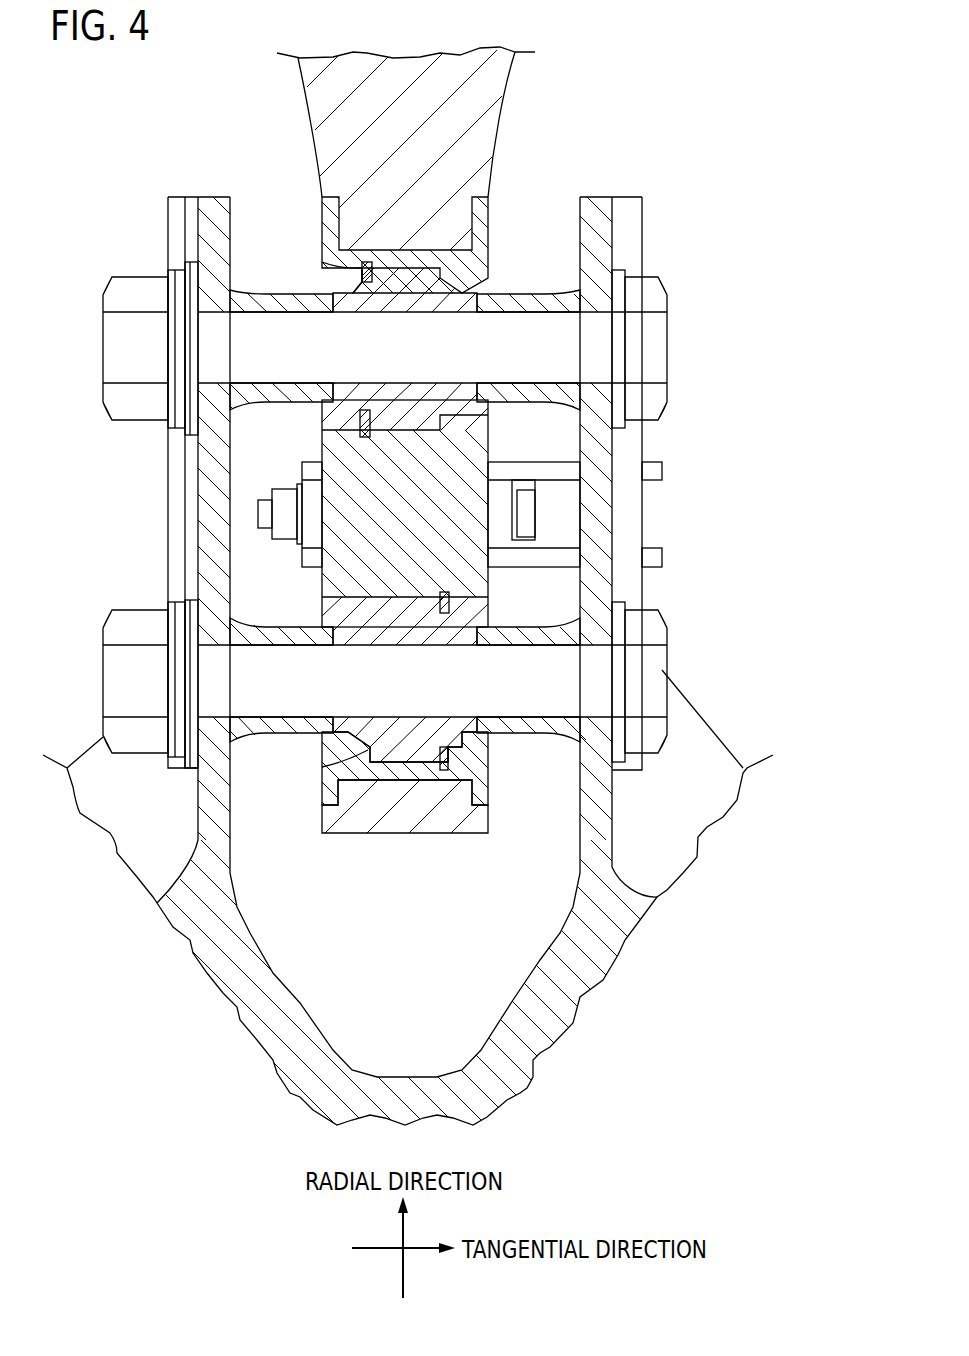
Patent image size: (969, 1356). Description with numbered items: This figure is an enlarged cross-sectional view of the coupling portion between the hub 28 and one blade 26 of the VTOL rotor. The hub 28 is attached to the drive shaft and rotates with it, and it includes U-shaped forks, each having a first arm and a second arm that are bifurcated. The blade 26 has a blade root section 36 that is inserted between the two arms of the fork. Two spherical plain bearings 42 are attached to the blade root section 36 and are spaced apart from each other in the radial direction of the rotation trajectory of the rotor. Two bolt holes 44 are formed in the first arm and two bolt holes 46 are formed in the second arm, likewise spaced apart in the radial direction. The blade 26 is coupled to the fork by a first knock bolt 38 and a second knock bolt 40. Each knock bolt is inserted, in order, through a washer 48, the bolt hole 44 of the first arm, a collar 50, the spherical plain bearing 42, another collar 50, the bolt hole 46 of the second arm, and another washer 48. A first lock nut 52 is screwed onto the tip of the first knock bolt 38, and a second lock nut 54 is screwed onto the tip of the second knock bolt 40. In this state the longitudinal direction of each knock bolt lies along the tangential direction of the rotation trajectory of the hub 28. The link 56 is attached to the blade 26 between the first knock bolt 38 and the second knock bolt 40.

The blade 26 is at (541, 84).
The hub 28 is at (750, 742).
The blade root section 36 is at (360, 820).
The first knock bolt 38 is at (643, 677).
The second knock bolt 40 is at (643, 345).
The spherical plain bearing 42 is at (427, 253).
The bolt hole 44 is at (587, 383).
The bolt hole 46 is at (215, 385).
The washer 48 is at (192, 297).
The collar 50 is at (272, 298).
The first lock nut 52 is at (118, 677).
The second lock nut 54 is at (118, 345).
The link 56 is at (565, 452).